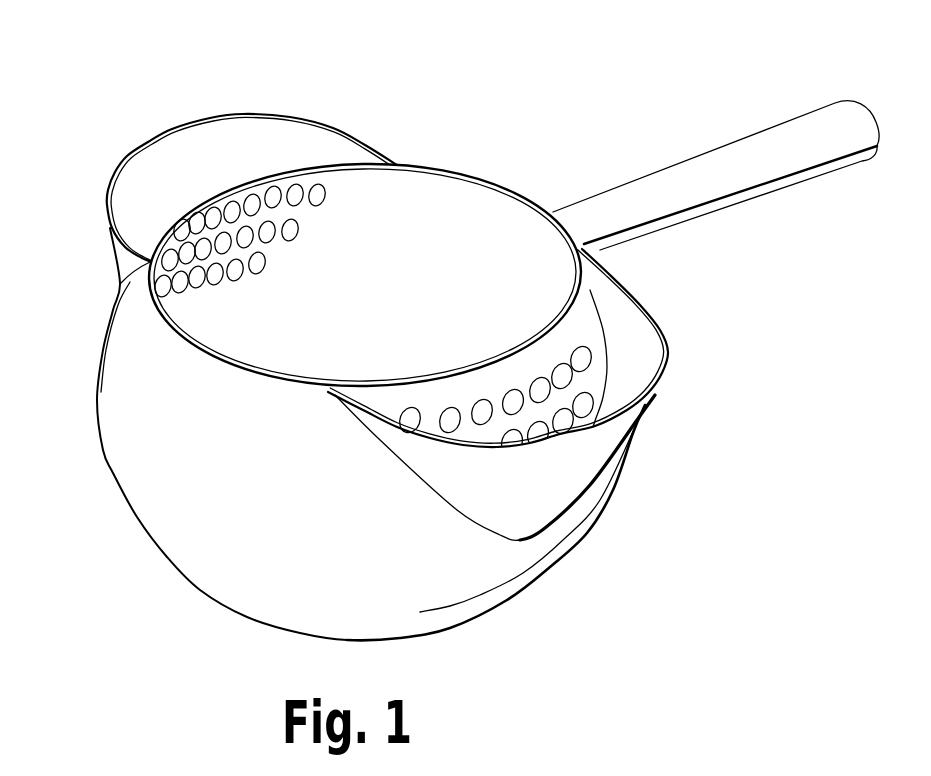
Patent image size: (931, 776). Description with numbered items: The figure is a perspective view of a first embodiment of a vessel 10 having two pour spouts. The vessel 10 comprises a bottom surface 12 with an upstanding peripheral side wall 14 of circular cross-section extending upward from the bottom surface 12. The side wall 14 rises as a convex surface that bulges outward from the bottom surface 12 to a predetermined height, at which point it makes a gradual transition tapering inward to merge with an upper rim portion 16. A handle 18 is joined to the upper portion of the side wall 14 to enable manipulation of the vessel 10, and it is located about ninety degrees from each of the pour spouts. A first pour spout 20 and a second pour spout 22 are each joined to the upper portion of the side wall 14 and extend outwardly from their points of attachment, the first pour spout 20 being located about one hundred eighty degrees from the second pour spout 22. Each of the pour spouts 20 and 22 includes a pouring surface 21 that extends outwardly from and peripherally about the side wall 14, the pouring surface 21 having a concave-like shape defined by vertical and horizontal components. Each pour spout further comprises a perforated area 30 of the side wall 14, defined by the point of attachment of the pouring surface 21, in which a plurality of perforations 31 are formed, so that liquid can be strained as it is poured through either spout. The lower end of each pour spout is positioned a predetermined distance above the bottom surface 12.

The vessel 10 is at (238, 86).
The bottom surface 12 is at (252, 622).
The side wall 14 is at (147, 488).
The upper rim portion 16 is at (468, 173).
The handle 18 is at (733, 157).
The first pour spout 20 is at (583, 460).
The pouring surface 21 is at (310, 127).
The second pour spout 22 is at (120, 264).
The perforated area 30 is at (541, 369).
The perforations 31 is at (448, 406).